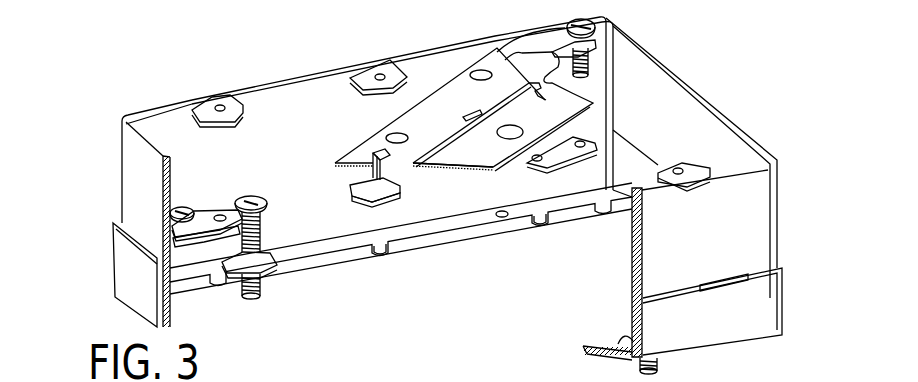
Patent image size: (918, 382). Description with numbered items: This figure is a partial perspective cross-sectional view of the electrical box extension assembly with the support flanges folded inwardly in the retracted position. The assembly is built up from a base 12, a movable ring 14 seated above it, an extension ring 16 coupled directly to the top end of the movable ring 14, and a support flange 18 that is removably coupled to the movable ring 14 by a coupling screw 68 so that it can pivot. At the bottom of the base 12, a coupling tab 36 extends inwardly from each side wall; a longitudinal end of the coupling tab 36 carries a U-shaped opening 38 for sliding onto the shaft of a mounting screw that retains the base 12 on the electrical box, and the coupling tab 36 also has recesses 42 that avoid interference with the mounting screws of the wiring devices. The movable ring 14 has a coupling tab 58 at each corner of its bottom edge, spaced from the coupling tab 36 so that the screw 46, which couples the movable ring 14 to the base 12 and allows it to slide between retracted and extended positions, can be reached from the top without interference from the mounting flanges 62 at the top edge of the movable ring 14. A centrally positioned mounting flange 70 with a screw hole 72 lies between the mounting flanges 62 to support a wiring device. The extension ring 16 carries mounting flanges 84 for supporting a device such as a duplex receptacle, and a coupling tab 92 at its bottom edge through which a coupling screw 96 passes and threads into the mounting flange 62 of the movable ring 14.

The base 12 is at (783, 301).
The movable ring 14 is at (170, 311).
The extension ring 16 is at (122, 156).
The support flange 18 is at (368, 141).
The coupling tab 36 is at (455, 224).
The opening 38 is at (630, 200).
The recesses 42 is at (378, 256).
The screw 46 is at (270, 204).
The coupling tab 58 is at (278, 268).
The mounting flanges 62 is at (570, 170).
The coupling screw 68 is at (585, 16).
The mounting flange 70 is at (399, 199).
The screw hole 72 is at (401, 186).
The mounting flanges 84 is at (257, 92).
The coupling tab 92 is at (198, 210).
The coupling screw 96 is at (183, 201).